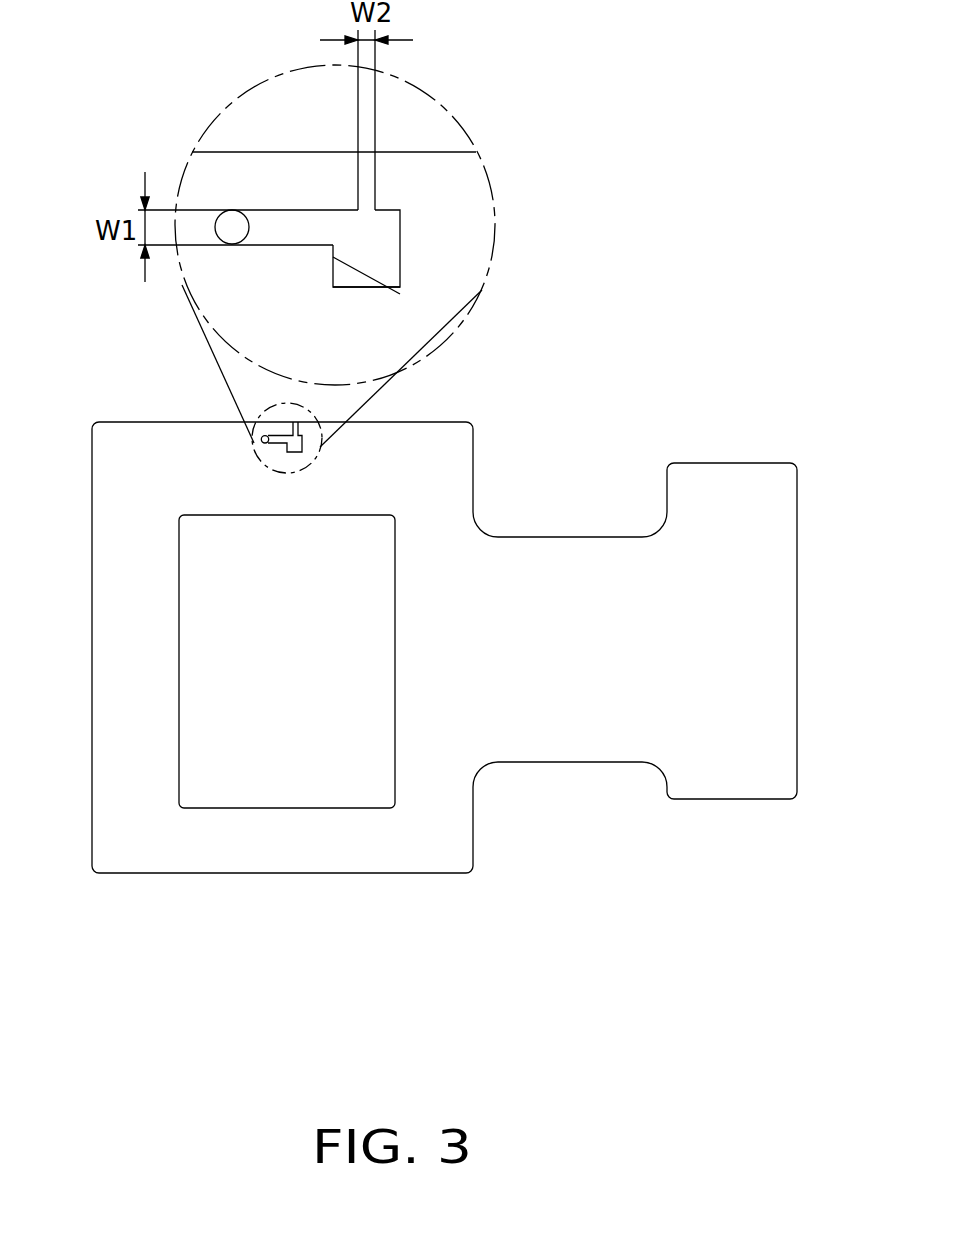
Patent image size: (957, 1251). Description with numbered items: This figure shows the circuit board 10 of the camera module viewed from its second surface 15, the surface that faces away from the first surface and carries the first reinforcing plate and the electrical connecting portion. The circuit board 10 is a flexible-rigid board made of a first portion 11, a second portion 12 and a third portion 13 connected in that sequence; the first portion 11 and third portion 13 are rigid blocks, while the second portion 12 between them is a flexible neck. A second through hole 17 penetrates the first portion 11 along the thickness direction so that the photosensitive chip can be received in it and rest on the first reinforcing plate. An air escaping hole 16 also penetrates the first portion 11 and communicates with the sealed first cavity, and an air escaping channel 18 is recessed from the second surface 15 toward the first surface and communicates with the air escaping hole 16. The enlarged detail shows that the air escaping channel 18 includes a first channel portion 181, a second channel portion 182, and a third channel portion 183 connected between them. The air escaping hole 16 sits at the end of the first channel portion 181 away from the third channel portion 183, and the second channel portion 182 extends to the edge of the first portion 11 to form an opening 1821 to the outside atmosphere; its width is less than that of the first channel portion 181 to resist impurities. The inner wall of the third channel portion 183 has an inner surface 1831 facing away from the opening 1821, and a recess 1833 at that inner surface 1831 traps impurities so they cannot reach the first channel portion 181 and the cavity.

The circuit board 10 is at (444, 613).
The first portion 11 is at (457, 450).
The second portion 12 is at (570, 630).
The third portion 13 is at (712, 611).
The second surface 15 is at (580, 750).
The air escaping hole 16 is at (226, 236).
The second through hole 17 is at (200, 612).
The air escaping channel 18 is at (381, 202).
The first channel portion 181 is at (298, 225).
The second channel portion 182 is at (463, 140).
The opening 1821 is at (368, 155).
The third channel portion 183 is at (352, 309).
The inner surface 1831 is at (362, 284).
The recess 1833 is at (400, 294).